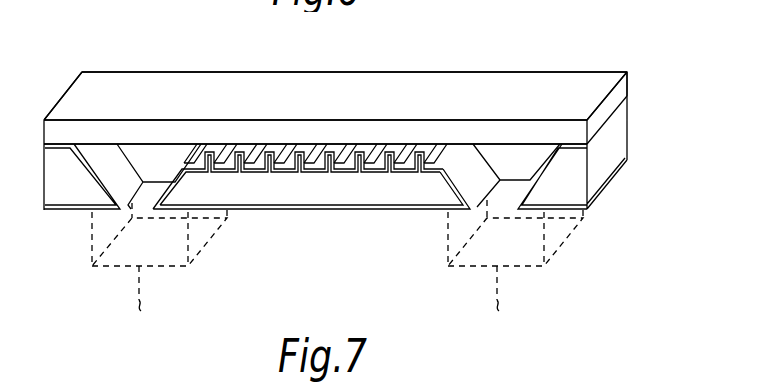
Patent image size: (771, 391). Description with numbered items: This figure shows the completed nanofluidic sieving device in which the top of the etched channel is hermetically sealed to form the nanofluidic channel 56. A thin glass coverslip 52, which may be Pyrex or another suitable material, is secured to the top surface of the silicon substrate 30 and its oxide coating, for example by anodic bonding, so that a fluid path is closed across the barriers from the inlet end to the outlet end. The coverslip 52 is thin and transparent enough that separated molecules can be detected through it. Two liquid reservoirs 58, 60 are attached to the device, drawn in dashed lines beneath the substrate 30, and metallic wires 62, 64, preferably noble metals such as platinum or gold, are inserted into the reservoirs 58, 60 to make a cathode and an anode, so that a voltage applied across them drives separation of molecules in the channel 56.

The nanofluidic channel 56 is at (603, 34).
The glass coverslip 52 is at (622, 88).
The silicon substrate 30 is at (625, 100).
The liquid reservoir 58 is at (188, 238).
The liquid reservoir 60 is at (544, 238).
The metallic wire 62 is at (138, 285).
The metallic wire 64 is at (496, 285).